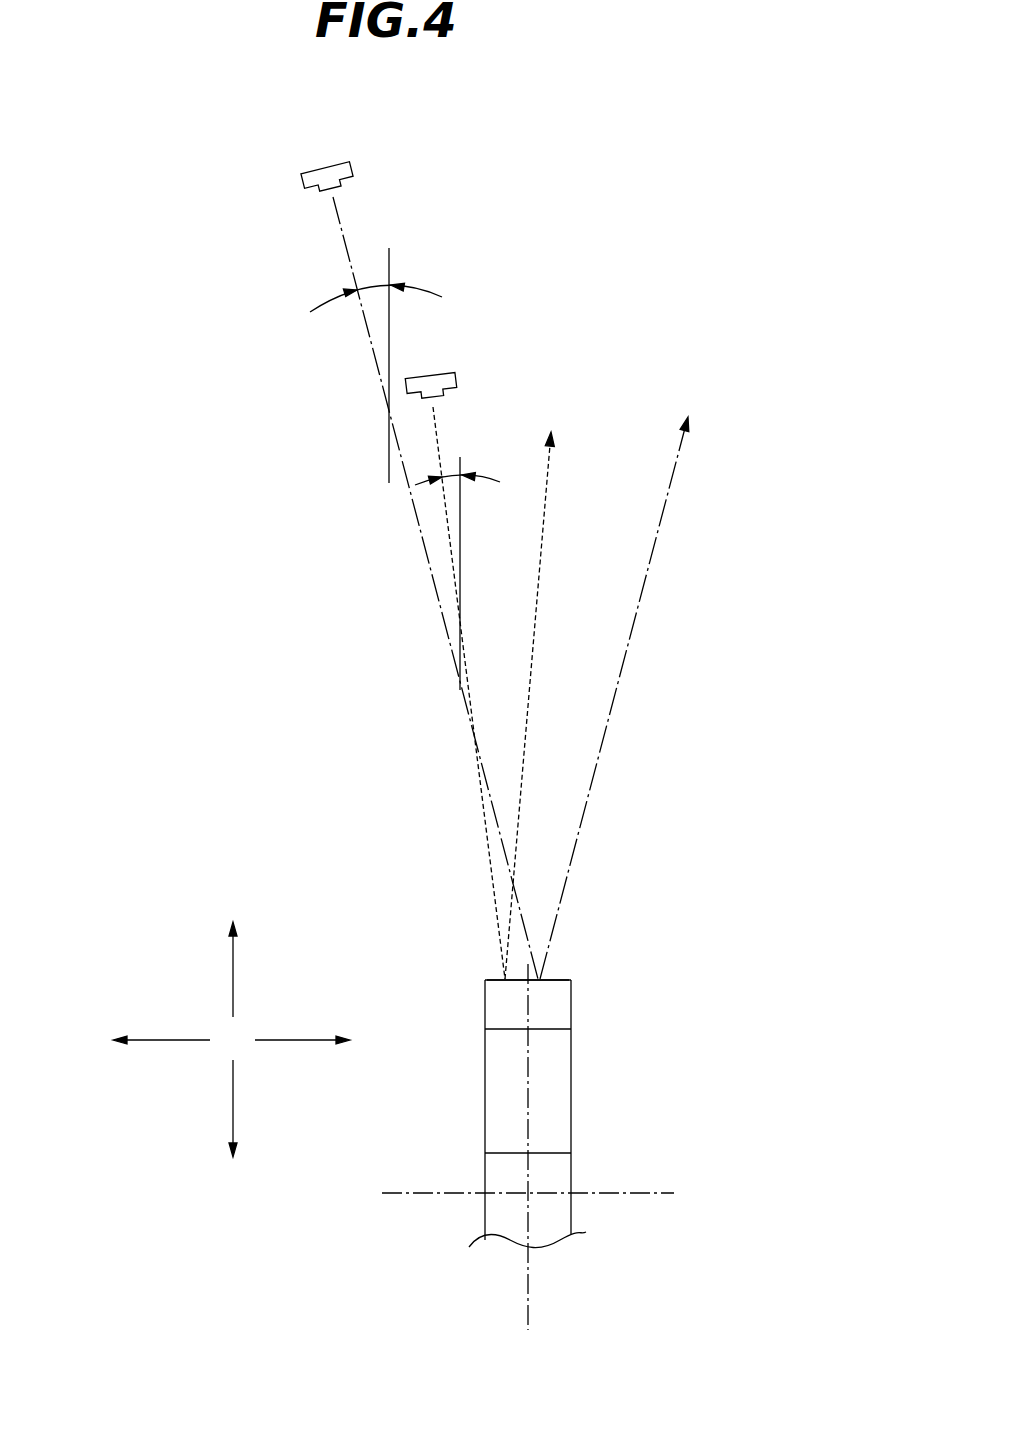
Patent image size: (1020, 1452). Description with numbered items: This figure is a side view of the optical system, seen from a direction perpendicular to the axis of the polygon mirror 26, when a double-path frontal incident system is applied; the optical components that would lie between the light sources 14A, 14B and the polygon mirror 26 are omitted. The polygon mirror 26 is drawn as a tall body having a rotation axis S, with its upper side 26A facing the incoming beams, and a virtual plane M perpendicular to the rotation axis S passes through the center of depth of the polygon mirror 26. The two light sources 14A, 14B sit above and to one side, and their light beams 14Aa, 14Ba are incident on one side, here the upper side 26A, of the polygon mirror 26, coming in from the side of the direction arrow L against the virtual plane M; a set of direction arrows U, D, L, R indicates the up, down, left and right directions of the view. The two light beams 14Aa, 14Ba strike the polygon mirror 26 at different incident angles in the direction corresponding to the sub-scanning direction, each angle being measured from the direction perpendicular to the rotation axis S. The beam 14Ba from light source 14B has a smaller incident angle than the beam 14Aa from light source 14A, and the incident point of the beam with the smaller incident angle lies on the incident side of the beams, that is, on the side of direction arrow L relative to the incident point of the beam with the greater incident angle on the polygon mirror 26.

The light source 14A is at (431, 373).
The light source 14B is at (317, 168).
The light beam 14Aa is at (547, 507).
The light beam 14Ba is at (633, 630).
The polygon mirror 26 is at (600, 1049).
The top surface of target member 26A is at (556, 978).
The rotation axis S is at (640, 1193).
The virtual plane M is at (528, 1289).
The direction arrow U is at (233, 993).
The direction arrow D is at (233, 1108).
The direction arrow L is at (178, 1040).
The direction arrow R is at (287, 1040).